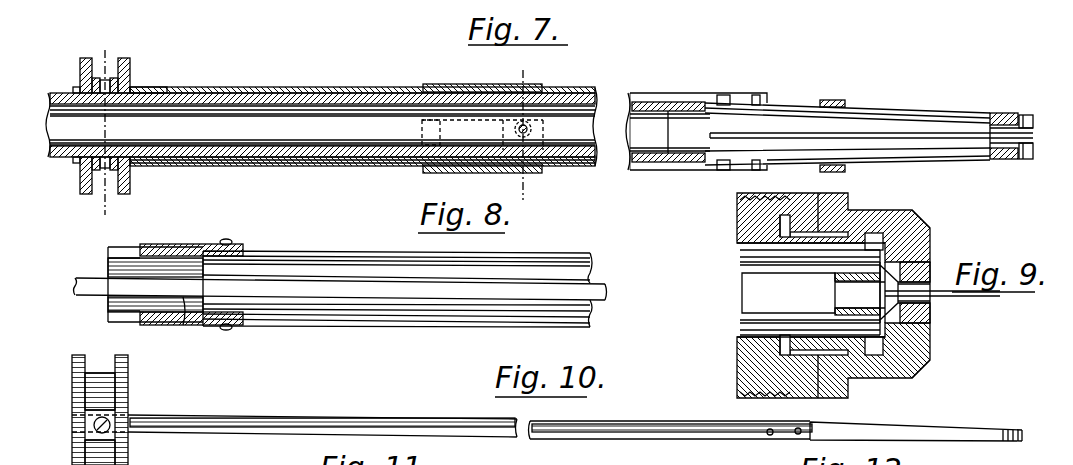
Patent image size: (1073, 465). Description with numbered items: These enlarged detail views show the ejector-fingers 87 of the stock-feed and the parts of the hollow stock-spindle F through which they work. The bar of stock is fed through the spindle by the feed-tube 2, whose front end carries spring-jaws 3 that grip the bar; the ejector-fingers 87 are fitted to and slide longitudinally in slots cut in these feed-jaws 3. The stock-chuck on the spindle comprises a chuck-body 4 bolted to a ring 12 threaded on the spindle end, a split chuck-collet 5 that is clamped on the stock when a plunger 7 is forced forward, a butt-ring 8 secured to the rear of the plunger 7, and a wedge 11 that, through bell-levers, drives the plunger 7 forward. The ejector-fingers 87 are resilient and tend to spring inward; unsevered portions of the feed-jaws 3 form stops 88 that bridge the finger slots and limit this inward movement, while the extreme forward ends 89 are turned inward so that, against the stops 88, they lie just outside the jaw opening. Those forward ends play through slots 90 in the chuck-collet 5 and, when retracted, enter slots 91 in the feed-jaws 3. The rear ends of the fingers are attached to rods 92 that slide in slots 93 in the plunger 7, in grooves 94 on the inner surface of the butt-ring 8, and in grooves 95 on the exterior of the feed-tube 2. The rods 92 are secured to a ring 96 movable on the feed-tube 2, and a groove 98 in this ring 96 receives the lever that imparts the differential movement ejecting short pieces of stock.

In FIG. 7, the feed-tube 2 is at (375, 110).
In FIG. 7, the spring-jaws 3 is at (988, 146).
In FIG. 9, the spring-jaws 3 is at (835, 304).
In FIG. 9, the chuck-body 4 is at (860, 217).
In FIG. 9, the chuck-collet 5 is at (902, 240).
In FIG. 8, the plunger 7 is at (302, 313).
In FIG. 7, the butt-ring 8 is at (536, 168).
In FIG. 8, the butt-ring 8 is at (178, 244).
In FIG. 7, the wedge 11 is at (521, 131).
In FIG. 7, the ring 12 is at (105, 129).
In FIG. 9, the ring 12 is at (796, 202).
In FIG. 7, the ejector-fingers 87 is at (906, 102).
In FIG. 9, the ejector-fingers 87 is at (740, 296).
In FIG. 10, the ejector-fingers 87 is at (946, 432).
In FIG. 9, the stops 88 is at (915, 263).
In FIG. 7, the inwardly-turned ends 89 is at (1000, 114).
In FIG. 9, the inwardly-turned ends 89 is at (865, 280).
In FIG. 9, the slots 90 is at (898, 267).
In FIG. 7, the slots 91 is at (1024, 116).
In FIG. 9, the slots 91 is at (898, 280).
In FIG. 7, the rods 92 is at (346, 92).
In FIG. 8, the rods 92 is at (470, 298).
In FIG. 10, the rods 92 is at (642, 424).
In FIG. 7, the slots 93 is at (755, 143).
In FIG. 7, the grooves 94 is at (468, 80).
In FIG. 8, the grooves 94 is at (180, 302).
In FIG. 7, the grooves 95 is at (253, 88).
In FIG. 8, the grooves 95 is at (404, 308).
In FIG. 7, the ring 96 is at (130, 85).
In FIG. 10, the ring 96 is at (110, 383).
In FIG. 7, the groove 98 is at (80, 176).
In FIG. 9, the stock-spindle F is at (740, 352).